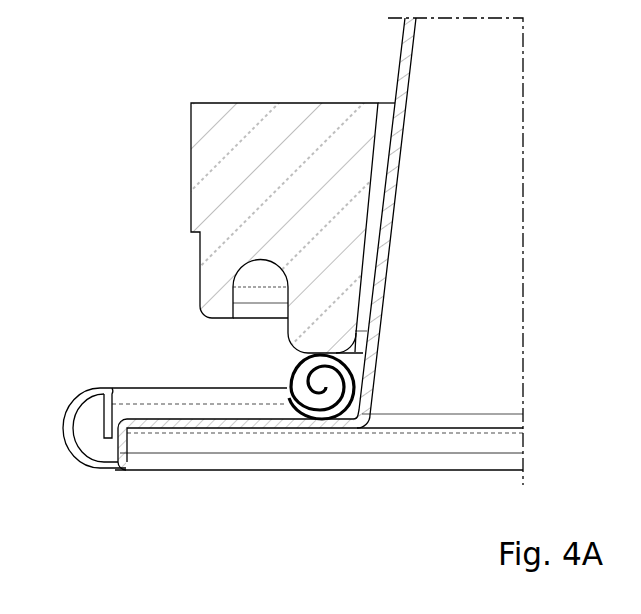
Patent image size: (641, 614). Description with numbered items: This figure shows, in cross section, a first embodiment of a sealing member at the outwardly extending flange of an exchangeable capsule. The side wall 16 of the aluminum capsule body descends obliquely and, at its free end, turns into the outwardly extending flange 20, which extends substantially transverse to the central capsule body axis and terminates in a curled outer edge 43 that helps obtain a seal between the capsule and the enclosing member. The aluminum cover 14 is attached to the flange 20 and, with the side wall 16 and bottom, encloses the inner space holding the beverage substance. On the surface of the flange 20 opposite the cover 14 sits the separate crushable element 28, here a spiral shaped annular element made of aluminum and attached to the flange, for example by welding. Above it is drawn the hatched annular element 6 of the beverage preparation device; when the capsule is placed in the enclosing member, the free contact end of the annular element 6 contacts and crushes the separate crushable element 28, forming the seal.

The annular element 6 is at (188, 156).
The side wall 16 is at (397, 68).
The outwardly extending flange 20 is at (173, 425).
The separate crushable element 28 is at (290, 370).
The curled outer edge 43 is at (75, 402).
The cover 14 is at (385, 428).